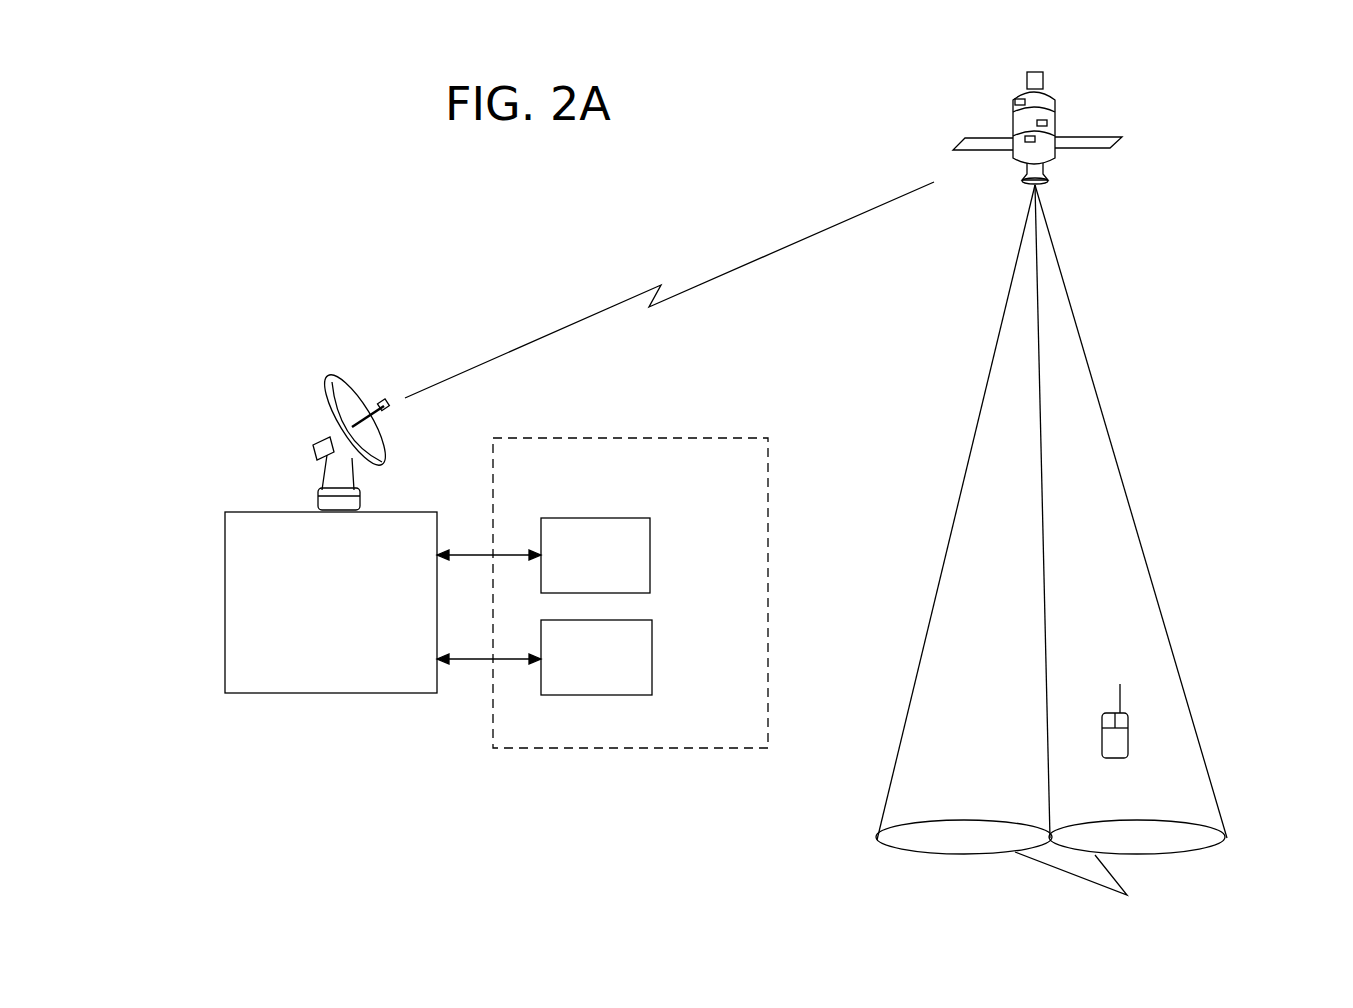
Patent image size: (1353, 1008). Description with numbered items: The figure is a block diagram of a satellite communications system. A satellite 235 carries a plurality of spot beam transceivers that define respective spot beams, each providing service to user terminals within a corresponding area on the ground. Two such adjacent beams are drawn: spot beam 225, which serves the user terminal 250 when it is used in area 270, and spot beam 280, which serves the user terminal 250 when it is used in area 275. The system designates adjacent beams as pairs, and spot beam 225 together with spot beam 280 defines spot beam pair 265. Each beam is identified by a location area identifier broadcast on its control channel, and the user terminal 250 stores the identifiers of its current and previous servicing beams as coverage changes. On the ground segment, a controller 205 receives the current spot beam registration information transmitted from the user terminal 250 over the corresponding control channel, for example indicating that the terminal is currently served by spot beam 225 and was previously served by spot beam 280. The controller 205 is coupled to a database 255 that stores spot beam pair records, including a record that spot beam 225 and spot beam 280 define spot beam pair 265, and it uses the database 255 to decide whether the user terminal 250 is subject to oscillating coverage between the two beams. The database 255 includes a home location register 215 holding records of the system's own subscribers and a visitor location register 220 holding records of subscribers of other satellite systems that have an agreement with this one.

The controller 205 is at (283, 697).
The home location register 215 is at (651, 553).
The visitor location register 220 is at (652, 663).
The spot beam 225 is at (1067, 392).
The satellite 235 is at (1047, 90).
The user terminal 250 is at (1128, 730).
The database 255 is at (680, 432).
The spot beam pair 265 is at (1099, 886).
The area 270 is at (1225, 842).
The area 275 is at (883, 845).
The spot beam 280 is at (1005, 388).